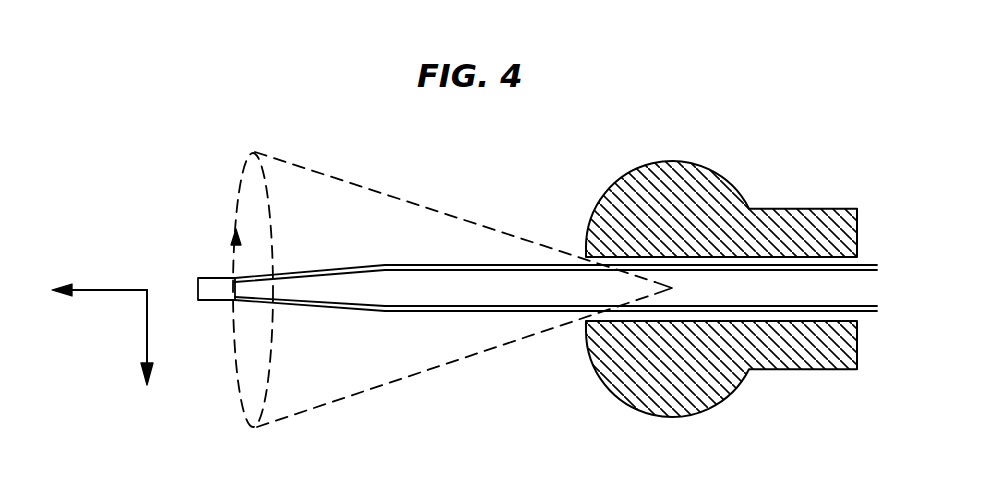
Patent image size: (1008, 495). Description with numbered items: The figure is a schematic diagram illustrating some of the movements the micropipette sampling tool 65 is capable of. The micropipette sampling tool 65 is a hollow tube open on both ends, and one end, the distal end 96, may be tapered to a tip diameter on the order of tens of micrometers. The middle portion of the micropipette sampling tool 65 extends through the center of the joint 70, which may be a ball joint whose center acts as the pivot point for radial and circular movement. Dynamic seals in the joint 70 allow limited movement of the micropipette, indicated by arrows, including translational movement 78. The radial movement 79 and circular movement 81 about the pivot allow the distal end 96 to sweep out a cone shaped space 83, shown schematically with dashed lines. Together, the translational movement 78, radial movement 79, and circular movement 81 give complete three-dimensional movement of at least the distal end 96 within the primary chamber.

The micropipette sampling tool 65 is at (823, 265).
The joint 70 is at (747, 205).
The translational movement 78 is at (95, 289).
The radial movement 79 is at (147, 337).
The circular movement 81 is at (242, 178).
The cone shaped space 83 is at (360, 186).
The distal end 96 is at (199, 278).